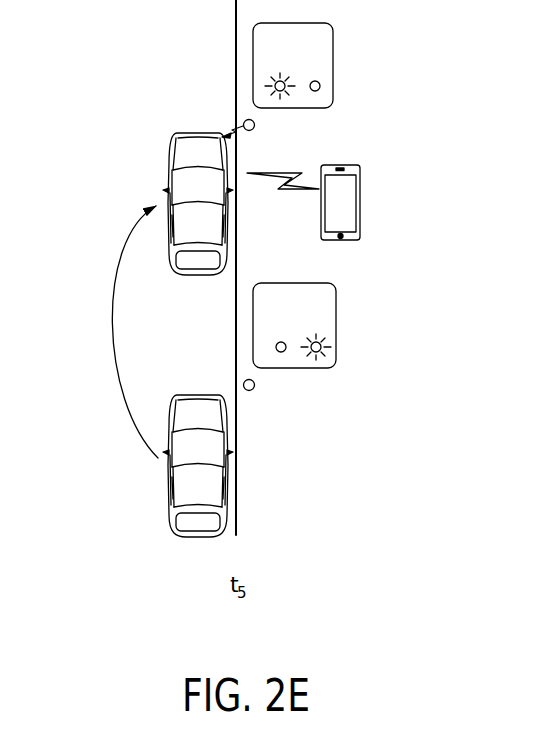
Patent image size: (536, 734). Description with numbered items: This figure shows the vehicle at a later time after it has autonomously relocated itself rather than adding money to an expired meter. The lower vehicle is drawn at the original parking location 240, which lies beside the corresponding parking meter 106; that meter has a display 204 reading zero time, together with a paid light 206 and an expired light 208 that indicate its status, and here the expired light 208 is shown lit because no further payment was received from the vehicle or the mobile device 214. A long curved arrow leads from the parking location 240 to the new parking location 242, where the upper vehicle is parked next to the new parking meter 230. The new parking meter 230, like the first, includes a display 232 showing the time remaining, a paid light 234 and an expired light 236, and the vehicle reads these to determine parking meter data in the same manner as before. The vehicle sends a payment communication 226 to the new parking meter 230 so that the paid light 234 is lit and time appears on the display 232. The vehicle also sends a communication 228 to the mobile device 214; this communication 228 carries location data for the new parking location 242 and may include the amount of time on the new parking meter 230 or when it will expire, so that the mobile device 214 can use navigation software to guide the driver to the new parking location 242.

The parking meter 106 is at (250, 391).
The display 204 is at (344, 348).
The paid green light 206 is at (286, 351).
The expired red light 208 is at (323, 350).
The mobile device 214 is at (362, 188).
The payment communication 226 is at (224, 129).
The communication 228 is at (283, 191).
The new parking meter 230 is at (245, 119).
The display 232 is at (345, 88).
The paid light 234 is at (293, 92).
The expired light 236 is at (320, 88).
The parking location 240 is at (136, 487).
The new parking location 242 is at (134, 179).